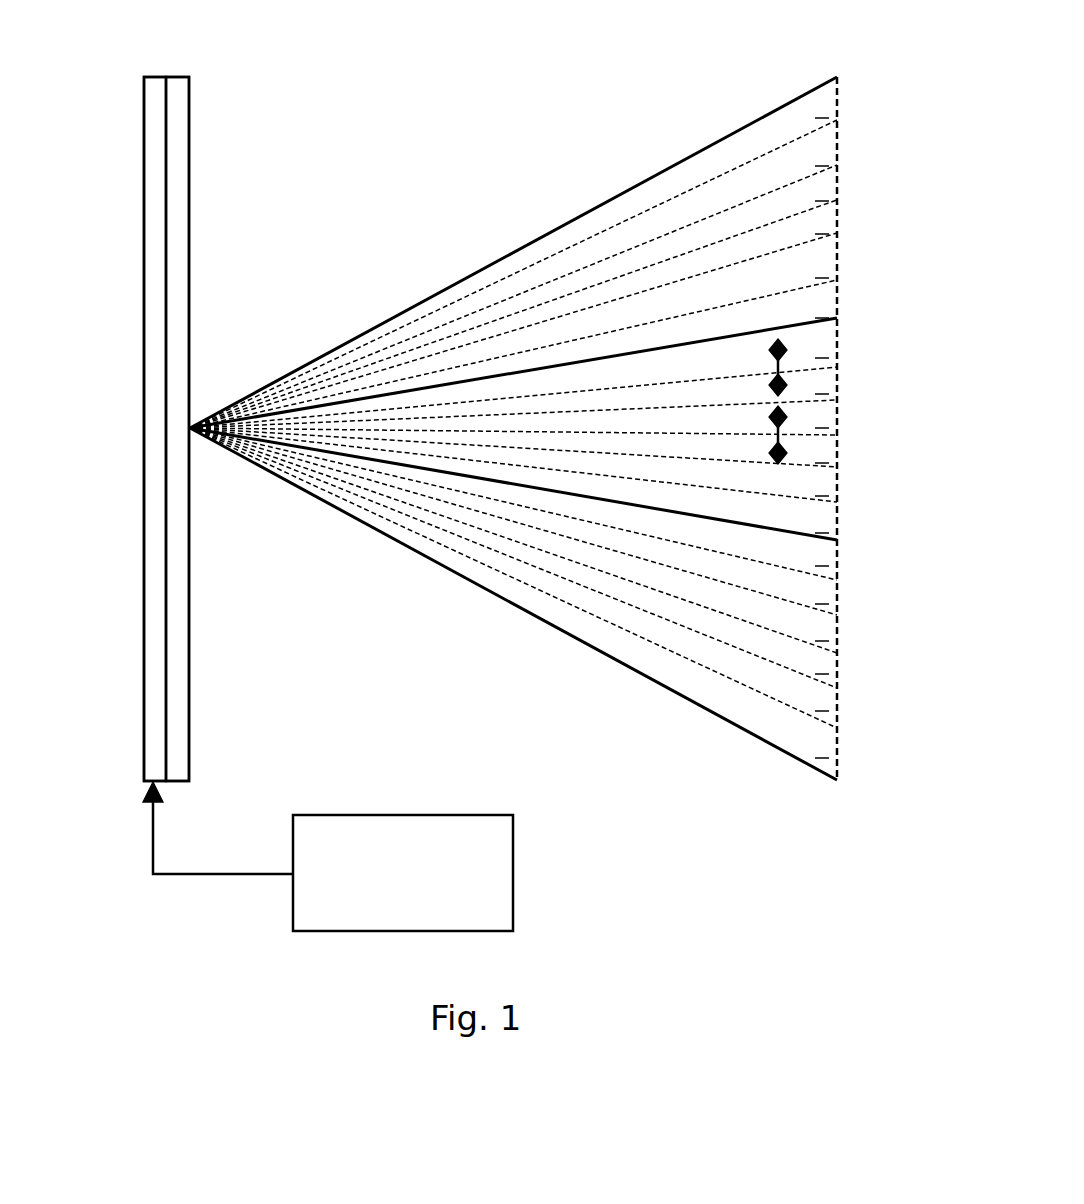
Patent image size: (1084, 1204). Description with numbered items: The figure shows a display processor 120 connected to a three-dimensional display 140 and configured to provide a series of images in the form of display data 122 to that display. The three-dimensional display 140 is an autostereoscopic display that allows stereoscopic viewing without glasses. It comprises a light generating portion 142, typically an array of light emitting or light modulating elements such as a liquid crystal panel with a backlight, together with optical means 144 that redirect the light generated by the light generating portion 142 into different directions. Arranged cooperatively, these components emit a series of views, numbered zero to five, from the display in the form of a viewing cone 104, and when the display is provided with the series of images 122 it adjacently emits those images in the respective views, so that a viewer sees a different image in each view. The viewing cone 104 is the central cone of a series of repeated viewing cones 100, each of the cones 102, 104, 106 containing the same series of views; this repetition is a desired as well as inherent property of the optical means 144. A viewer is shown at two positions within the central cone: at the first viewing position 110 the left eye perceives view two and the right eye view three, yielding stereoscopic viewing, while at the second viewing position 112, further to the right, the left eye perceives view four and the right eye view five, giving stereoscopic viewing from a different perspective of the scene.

The series of repeated viewing cones 100 is at (378, 542).
The viewing cone 102 is at (848, 552).
The viewing cone 104 is at (848, 320).
The viewing cone 106 is at (849, 100).
The first viewing position 110 is at (768, 426).
The second viewing position 112 is at (768, 362).
The display processor 120 is at (403, 873).
The display data 122 is at (190, 875).
The 3D display 140 is at (164, 405).
The light generating portion 142 is at (155, 690).
The optical means 144 is at (175, 735).